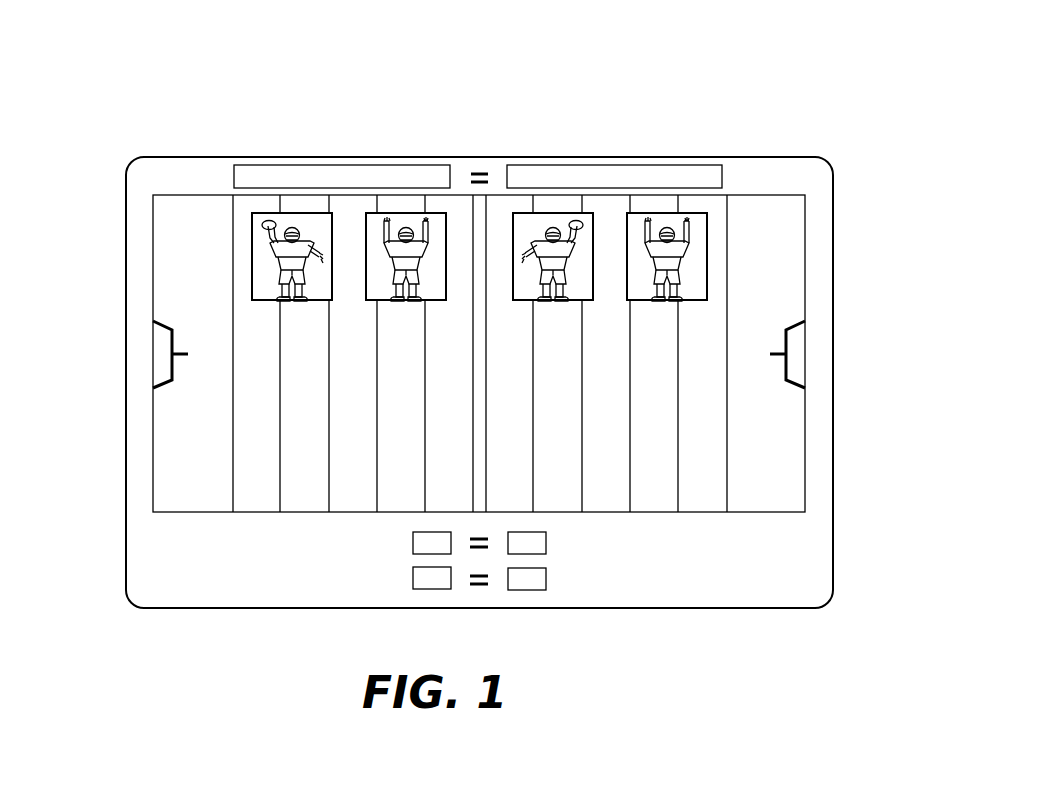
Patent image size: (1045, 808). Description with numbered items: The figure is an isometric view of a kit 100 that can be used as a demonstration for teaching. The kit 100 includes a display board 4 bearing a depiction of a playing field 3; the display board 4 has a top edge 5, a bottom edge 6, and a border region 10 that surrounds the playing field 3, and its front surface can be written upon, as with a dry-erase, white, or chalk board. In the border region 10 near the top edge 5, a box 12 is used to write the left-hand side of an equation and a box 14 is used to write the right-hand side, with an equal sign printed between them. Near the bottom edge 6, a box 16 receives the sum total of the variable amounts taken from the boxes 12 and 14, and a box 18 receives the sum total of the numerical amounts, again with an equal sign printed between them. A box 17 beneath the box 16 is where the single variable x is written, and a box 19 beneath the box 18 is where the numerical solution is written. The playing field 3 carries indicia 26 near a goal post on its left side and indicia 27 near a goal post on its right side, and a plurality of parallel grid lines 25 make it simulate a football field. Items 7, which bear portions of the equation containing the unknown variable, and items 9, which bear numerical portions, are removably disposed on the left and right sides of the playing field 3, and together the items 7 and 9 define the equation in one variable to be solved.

The kit 100 is at (172, 100).
The border region 10 is at (768, 180).
The bottom edge 6 is at (692, 612).
The playing field 3 is at (170, 258).
The display board 4 is at (320, 158).
The box 12 is at (420, 165).
The top edge 5 is at (526, 157).
The box 14 is at (592, 165).
The indicia 26 is at (172, 305).
The indicia 27 is at (793, 293).
The item 7 is at (252, 253).
The item 9 is at (365, 298).
The parallel grid lines 25 is at (325, 492).
The box 16 is at (413, 551).
The box 17 is at (413, 573).
The box 18 is at (546, 548).
The box 19 is at (546, 572).